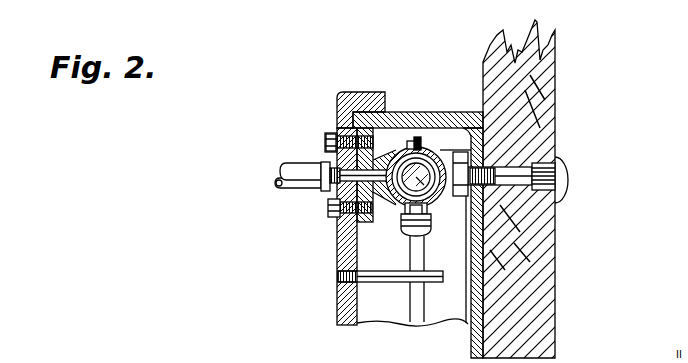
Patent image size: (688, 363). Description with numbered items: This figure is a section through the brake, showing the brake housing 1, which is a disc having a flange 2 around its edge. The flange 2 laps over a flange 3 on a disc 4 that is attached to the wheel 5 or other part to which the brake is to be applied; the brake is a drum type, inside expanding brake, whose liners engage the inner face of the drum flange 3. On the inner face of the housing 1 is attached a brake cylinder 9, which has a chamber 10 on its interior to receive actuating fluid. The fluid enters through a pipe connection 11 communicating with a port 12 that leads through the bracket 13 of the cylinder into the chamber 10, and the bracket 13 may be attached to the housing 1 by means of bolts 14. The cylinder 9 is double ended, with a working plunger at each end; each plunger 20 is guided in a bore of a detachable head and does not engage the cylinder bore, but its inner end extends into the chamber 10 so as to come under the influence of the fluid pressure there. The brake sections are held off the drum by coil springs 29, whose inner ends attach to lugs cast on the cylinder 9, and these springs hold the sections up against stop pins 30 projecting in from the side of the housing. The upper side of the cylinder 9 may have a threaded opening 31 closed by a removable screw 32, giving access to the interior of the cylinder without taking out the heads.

The brake housing 1 is at (338, 258).
The flange 2 is at (345, 102).
The flange 3 is at (443, 117).
The disc 4 is at (477, 318).
The wheel 5 is at (553, 243).
The brake cylinder 9 is at (432, 150).
The chamber 10 is at (400, 150).
The pipe connection 11 is at (284, 170).
The port 12 is at (378, 217).
The bracket 13 is at (362, 138).
The bolts 14 is at (330, 137).
The plunger 20 is at (437, 205).
The coil springs 29 is at (428, 240).
The stop pins 30 is at (395, 282).
The threaded opening 31 is at (411, 140).
The removable screw 32 is at (418, 137).